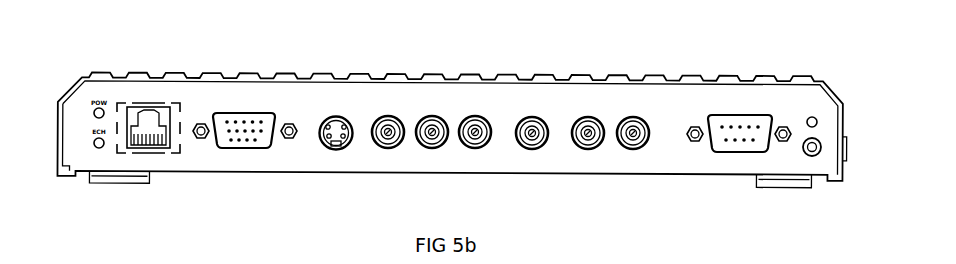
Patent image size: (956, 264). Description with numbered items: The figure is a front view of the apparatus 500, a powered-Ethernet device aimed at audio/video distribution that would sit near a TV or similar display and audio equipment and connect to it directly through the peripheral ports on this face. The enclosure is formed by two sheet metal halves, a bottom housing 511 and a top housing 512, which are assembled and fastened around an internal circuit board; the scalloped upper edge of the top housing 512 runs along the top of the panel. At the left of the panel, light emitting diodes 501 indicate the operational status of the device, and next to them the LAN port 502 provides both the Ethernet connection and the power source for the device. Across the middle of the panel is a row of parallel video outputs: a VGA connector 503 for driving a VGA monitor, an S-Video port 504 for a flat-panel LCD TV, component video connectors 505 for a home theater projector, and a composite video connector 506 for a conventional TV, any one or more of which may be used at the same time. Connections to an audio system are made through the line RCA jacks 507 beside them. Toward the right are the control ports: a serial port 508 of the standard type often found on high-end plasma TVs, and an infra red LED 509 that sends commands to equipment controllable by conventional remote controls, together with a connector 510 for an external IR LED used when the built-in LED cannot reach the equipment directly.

The apparatus 500 is at (84, 58).
The light emitting diodes 501 is at (98, 148).
The LAN port 502 is at (147, 118).
The VGA connector 503 is at (217, 140).
The S-Video port 504 is at (322, 145).
The component video connectors 505 is at (462, 140).
The composite video connector 506 is at (517, 138).
The line RCA jacks 507 is at (620, 141).
The RS-232 serial port 508 is at (710, 140).
The infra red LED 509 is at (810, 127).
The IR emitter jack 510 is at (808, 153).
The bottom housing 511 is at (675, 93).
The top housing 512 is at (767, 80).